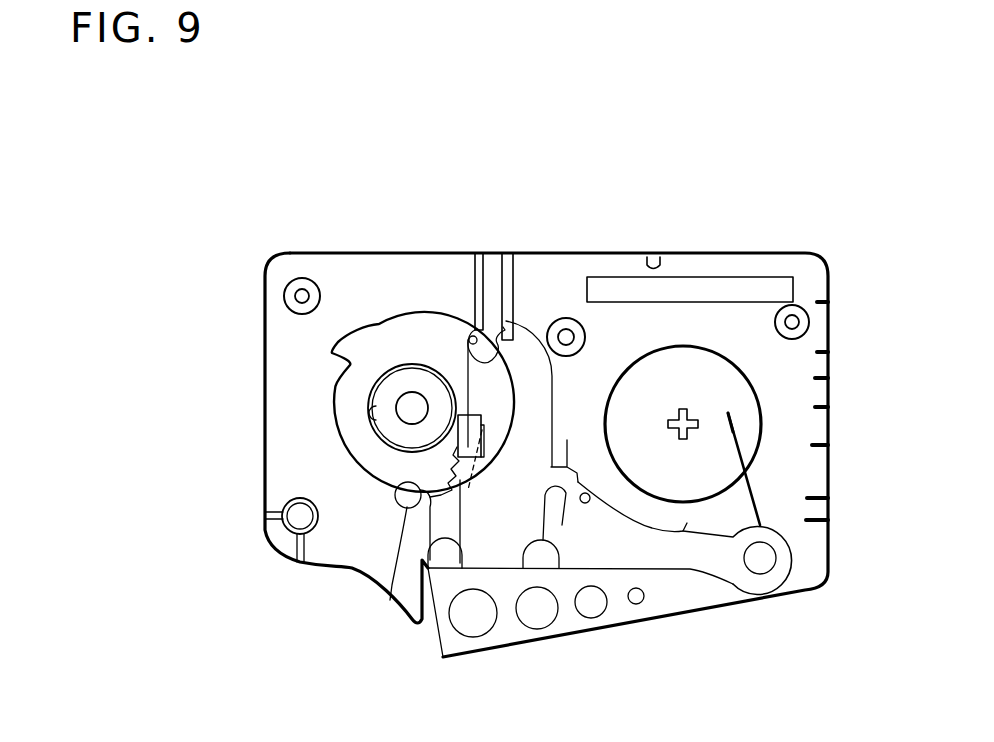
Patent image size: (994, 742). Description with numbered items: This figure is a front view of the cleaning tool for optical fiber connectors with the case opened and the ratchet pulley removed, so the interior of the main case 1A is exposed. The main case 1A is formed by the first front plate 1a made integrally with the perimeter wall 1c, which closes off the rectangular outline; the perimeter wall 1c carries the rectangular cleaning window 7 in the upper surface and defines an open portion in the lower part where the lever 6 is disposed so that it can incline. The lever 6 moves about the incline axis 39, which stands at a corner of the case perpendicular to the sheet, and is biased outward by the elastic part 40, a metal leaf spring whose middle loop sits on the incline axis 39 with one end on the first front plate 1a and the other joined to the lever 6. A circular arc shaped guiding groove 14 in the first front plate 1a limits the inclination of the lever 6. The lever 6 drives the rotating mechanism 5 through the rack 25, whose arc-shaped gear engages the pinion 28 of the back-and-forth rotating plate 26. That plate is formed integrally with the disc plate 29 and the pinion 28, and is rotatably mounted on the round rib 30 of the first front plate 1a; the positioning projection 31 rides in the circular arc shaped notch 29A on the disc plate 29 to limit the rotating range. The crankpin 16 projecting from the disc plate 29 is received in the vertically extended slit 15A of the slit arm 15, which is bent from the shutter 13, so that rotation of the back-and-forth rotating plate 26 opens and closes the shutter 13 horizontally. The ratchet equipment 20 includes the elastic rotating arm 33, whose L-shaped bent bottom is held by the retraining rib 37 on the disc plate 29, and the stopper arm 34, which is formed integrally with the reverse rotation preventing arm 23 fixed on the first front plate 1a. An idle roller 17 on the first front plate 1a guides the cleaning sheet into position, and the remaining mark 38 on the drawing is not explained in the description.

The main case 1A is at (291, 245).
The first front plate 1a is at (653, 553).
The perimeter wall 1c is at (546, 252).
The rotating mechanism 5 is at (417, 293).
The lever 6 is at (510, 625).
The cleaning window 7 is at (740, 243).
The shutter 13 is at (482, 416).
The guiding groove 14 is at (587, 540).
The slit arm 15 is at (517, 310).
The slit 15A is at (467, 262).
The crankpin 16 is at (370, 405).
The idle roller 17 is at (300, 297).
The ratchet equipment 20 is at (464, 303).
The reverse rotation preventing arm 23 is at (712, 572).
The rack 25 is at (450, 530).
The back-and-forth rotating plate 26 is at (353, 327).
The pinion 28 is at (393, 475).
The disc plate 29 is at (397, 447).
The circular arc shaped notch 29A is at (330, 373).
The round rib 30 is at (393, 445).
The positioning projection 31 is at (391, 612).
The elastic rotating arm 33 is at (493, 277).
The stopper arm 34 is at (545, 310).
The retraining rib 37 is at (490, 418).
The top edge 38 is at (725, 245).
The incline axis 39 is at (763, 565).
The elastic part 40 is at (733, 430).